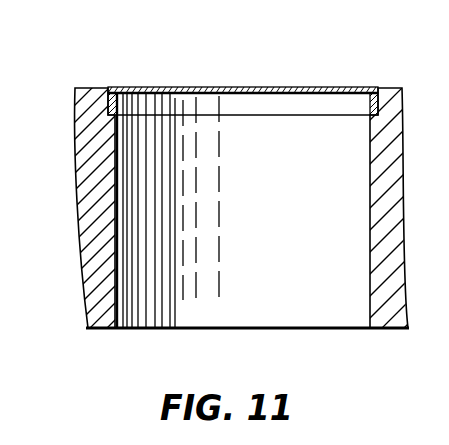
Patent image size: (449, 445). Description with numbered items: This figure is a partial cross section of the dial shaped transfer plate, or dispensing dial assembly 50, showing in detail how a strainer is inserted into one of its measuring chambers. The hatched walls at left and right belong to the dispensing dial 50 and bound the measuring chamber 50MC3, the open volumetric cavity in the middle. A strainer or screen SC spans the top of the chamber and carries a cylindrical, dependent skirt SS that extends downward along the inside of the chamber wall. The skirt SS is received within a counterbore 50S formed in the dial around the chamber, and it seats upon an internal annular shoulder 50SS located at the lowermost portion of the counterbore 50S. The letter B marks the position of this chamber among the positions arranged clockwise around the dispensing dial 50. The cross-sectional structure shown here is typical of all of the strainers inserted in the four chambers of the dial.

The dispensing dial assembly 50 is at (388, 84).
The counterbore 50S is at (100, 108).
The internal annular shoulder 50SS is at (108, 117).
The strainer SC is at (149, 80).
The dependent skirt SS is at (176, 105).
The measuring chamber 50MC3 is at (268, 216).
The position B is at (6, 219).